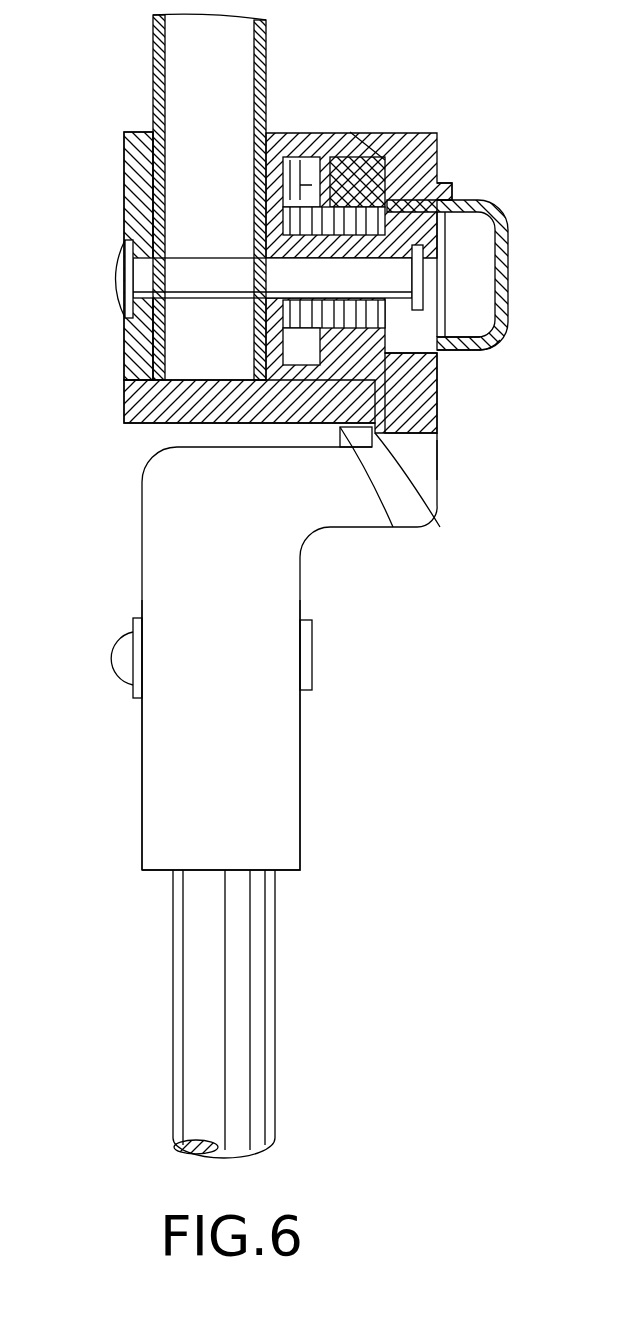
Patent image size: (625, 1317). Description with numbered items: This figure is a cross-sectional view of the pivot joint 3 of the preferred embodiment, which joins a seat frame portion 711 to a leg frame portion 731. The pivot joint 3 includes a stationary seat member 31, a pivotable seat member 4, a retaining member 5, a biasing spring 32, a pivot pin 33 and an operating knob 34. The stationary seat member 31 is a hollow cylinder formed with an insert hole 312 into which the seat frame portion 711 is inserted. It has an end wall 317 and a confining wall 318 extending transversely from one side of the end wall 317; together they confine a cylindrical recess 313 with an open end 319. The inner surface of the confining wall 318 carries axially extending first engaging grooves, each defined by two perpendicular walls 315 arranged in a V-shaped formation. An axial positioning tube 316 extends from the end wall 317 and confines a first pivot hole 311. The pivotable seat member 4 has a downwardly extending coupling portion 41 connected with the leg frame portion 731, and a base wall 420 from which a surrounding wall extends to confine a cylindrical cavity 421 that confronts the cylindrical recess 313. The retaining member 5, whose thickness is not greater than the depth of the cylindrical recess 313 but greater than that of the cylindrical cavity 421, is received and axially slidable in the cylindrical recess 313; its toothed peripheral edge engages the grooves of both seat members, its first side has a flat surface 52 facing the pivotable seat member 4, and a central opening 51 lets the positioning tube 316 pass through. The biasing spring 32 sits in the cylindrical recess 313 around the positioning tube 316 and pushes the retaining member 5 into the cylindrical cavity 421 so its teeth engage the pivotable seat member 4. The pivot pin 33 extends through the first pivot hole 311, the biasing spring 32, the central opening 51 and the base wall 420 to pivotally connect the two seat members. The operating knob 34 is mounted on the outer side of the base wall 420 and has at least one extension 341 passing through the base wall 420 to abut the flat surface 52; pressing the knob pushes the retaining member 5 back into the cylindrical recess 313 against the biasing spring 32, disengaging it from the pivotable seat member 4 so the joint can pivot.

The pivot joint 3 is at (276, 267).
The pivotable seat member 4 is at (302, 648).
The retaining member 5 is at (420, 430).
The stationary seat member 31 is at (137, 403).
The biasing spring 32 is at (320, 215).
The pivot pin 33 is at (115, 285).
The operating knob 34 is at (471, 314).
The coupling portion 41 is at (280, 748).
The central opening 51 is at (455, 347).
The flat surface 52 is at (378, 180).
The first pivot hole 311 is at (143, 422).
The insert hole 312 is at (145, 205).
The cylindrical recess 313 is at (296, 190).
The perpendicular walls 315 is at (312, 133).
The axial positioning tube 316 is at (437, 478).
The end wall 317 is at (280, 133).
The confining wall 318 is at (380, 495).
The open end 319 is at (350, 132).
The extension 341 is at (437, 390).
The base wall 420 is at (440, 148).
The cylindrical cavity 421 is at (430, 492).
The seat frame portion 711 is at (268, 63).
The leg frame portion 731 is at (262, 1000).